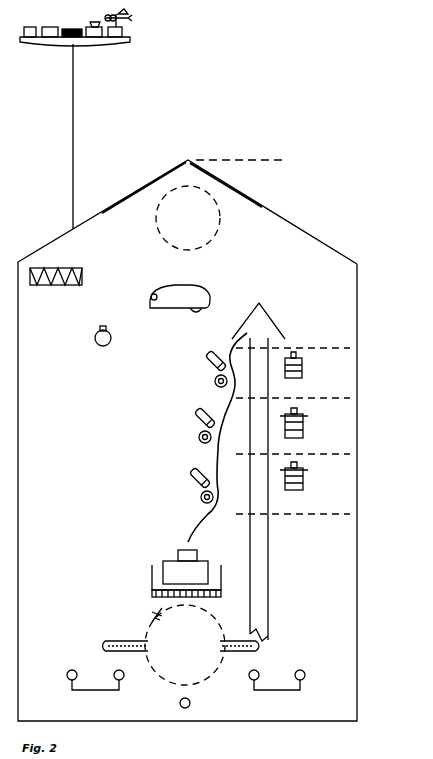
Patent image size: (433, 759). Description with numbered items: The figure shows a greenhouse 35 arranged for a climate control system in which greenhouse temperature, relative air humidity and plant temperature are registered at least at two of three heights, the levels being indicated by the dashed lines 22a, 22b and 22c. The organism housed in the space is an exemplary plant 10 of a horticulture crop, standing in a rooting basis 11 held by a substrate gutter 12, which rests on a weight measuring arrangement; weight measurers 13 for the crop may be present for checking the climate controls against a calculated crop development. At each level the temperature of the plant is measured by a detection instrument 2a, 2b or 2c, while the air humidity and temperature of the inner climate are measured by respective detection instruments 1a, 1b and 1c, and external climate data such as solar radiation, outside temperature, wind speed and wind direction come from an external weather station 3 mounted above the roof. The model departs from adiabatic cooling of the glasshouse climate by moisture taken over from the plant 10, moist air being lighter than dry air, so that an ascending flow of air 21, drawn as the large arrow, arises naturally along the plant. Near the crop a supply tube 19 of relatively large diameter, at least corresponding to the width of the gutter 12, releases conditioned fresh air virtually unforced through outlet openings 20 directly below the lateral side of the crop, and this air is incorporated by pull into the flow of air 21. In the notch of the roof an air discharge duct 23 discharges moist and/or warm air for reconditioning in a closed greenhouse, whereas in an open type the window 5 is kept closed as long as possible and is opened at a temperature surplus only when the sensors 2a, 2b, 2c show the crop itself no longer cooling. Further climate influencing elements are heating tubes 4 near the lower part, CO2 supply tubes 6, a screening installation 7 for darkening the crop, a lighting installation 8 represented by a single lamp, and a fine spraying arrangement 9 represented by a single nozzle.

The detection instrument 1a is at (303, 470).
The detection instrument 1b is at (303, 418).
The detection instrument 1c is at (300, 362).
The detection instrument 2a is at (191, 469).
The detection instrument 2b is at (196, 409).
The detection instrument 2c is at (206, 351).
The external weather station 3 is at (130, 39).
The heating tubes 4 is at (77, 672).
The ventilation opening 5 is at (268, 204).
The CO2 supply tubes 6 is at (180, 705).
The screening installation 7 is at (82, 276).
The lighting installation 8 is at (150, 297).
The fine spraying arrangement 9 is at (97, 330).
The plant 10 is at (191, 520).
The rooting basis 11 is at (172, 572).
The substrate gutter 12 is at (152, 580).
The weight measurers 13 is at (152, 594).
The supply tube 19 is at (218, 672).
The outlet openings 20 is at (260, 648).
The ascending flow of air 21 is at (268, 590).
The level 22a is at (293, 484).
The level 22b is at (293, 426).
The level 22c is at (293, 373).
The air discharge duct 23 is at (220, 222).
The greenhouse 35 is at (18, 376).